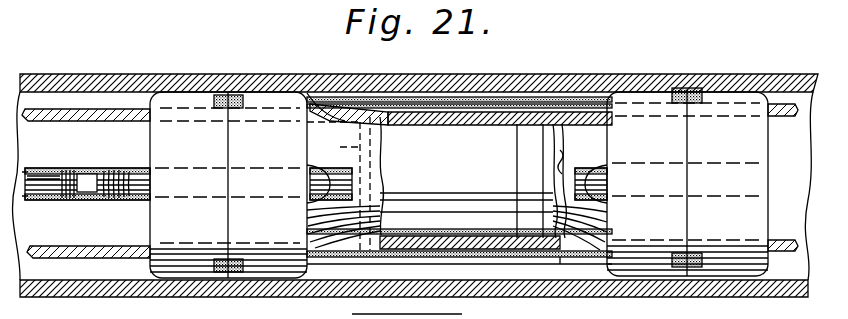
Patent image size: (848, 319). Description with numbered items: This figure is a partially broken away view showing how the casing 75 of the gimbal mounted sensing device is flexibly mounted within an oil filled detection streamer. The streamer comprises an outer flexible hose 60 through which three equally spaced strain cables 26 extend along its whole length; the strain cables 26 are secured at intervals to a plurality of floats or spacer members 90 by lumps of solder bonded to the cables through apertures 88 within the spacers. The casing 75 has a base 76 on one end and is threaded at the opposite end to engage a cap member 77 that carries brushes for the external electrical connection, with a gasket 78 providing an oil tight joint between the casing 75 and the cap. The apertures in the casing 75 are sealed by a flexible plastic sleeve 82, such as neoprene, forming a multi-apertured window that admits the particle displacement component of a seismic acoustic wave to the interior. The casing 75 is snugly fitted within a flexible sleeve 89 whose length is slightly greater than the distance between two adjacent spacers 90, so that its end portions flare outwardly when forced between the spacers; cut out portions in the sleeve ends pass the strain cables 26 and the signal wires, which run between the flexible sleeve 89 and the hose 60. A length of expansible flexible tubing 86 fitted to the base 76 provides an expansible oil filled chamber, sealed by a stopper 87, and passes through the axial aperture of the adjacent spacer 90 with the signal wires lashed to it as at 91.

The outer flexible hose 60 is at (163, 75).
The strain cables 26 is at (53, 122).
The expansible flexible tubing 86 is at (86, 183).
The stopper 87 is at (58, 198).
The lashing 91 is at (105, 200).
The apertures 88 is at (235, 110).
The floats or spacer members 90 is at (263, 231).
The base 76 is at (345, 183).
The cap member 77 is at (568, 163).
The flexible plastic sleeve 82 is at (433, 135).
The flexible sleeve 89 is at (480, 100).
The casing 75 is at (528, 135).
The gasket 78 is at (538, 256).